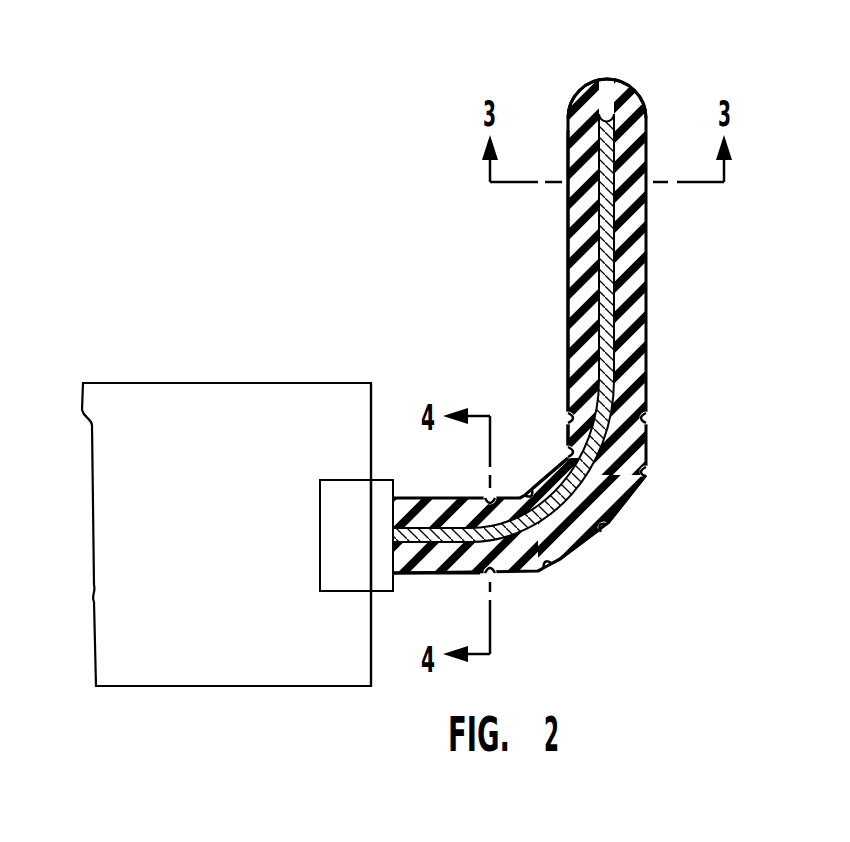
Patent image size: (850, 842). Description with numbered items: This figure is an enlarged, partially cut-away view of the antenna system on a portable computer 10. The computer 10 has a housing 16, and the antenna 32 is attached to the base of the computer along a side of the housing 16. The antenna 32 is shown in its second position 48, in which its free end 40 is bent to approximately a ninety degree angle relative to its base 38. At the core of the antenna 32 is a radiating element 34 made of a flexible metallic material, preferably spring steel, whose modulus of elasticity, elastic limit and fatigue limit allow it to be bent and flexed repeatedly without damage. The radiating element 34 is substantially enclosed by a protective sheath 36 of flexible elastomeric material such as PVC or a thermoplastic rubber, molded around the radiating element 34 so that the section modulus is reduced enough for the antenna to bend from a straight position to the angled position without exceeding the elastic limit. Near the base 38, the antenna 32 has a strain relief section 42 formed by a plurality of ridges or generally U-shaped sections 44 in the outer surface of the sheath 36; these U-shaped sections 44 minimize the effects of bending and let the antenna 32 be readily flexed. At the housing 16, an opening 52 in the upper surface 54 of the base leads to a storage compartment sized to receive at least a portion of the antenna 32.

The portable computer 10 is at (270, 383).
The housing 16 is at (372, 405).
The antenna 32 is at (568, 291).
The radiating element 34 is at (612, 255).
The protective sheath 36 is at (628, 433).
The base 38 is at (425, 565).
The free end 40 is at (607, 132).
The strain relief section 42 is at (532, 438).
The U-shaped sections 44 is at (613, 542).
The second position 48 is at (733, 363).
The opening 52 is at (382, 505).
The upper surface 54 is at (370, 490).